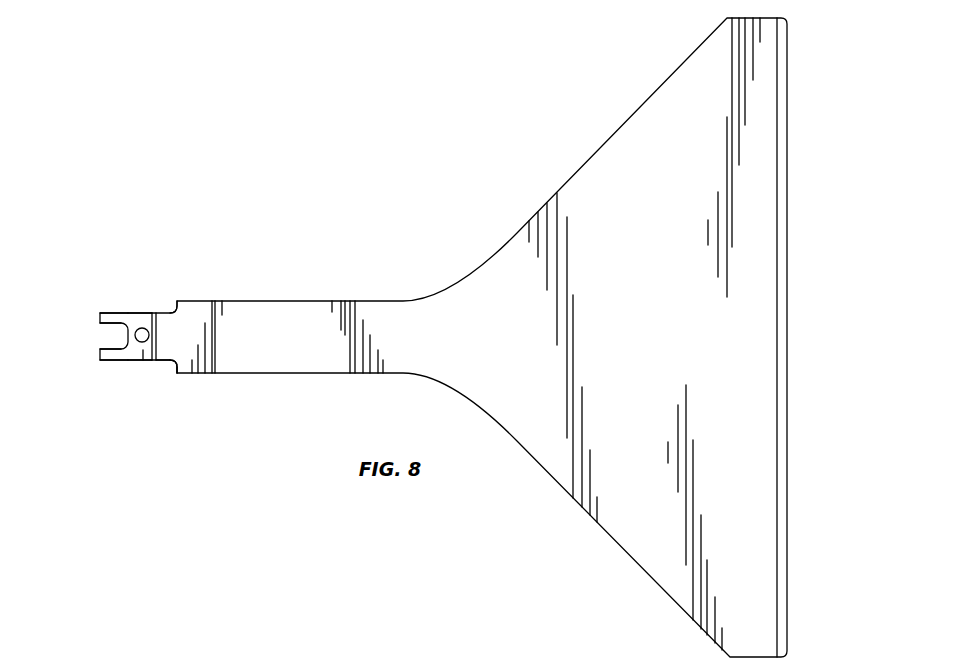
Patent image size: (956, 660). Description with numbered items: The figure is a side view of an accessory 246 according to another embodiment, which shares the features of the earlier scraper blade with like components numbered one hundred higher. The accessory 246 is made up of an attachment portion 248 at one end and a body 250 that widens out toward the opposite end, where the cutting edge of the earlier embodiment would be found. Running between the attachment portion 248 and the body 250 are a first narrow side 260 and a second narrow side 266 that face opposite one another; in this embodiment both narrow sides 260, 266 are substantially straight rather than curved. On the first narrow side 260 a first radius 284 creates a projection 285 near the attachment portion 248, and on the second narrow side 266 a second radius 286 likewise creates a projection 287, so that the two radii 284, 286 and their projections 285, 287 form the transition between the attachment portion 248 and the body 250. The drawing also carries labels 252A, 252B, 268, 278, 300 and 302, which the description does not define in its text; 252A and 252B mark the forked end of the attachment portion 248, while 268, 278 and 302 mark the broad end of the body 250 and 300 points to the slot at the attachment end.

The accessory 246 is at (327, 148).
The attachment portion 248 is at (136, 311).
The body 250 is at (510, 238).
The upper prong 252A is at (108, 311).
The lower prong 252B is at (110, 362).
The first narrow side 260 is at (288, 300).
The second narrow side 266 is at (293, 374).
The aperture face 268 is at (789, 267).
The aperture lower portion 278 is at (789, 410).
The first radius 284 is at (166, 310).
The projection 285 is at (174, 296).
The second radius 286 is at (166, 372).
The projection 287 is at (174, 380).
The slot 300 is at (99, 318).
The aperture upper corner 302 is at (789, 77).